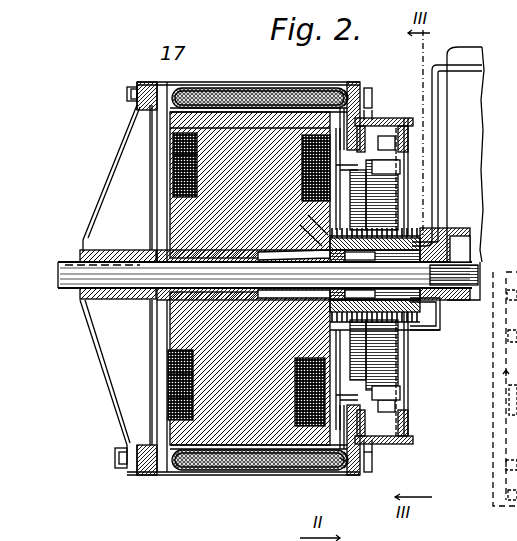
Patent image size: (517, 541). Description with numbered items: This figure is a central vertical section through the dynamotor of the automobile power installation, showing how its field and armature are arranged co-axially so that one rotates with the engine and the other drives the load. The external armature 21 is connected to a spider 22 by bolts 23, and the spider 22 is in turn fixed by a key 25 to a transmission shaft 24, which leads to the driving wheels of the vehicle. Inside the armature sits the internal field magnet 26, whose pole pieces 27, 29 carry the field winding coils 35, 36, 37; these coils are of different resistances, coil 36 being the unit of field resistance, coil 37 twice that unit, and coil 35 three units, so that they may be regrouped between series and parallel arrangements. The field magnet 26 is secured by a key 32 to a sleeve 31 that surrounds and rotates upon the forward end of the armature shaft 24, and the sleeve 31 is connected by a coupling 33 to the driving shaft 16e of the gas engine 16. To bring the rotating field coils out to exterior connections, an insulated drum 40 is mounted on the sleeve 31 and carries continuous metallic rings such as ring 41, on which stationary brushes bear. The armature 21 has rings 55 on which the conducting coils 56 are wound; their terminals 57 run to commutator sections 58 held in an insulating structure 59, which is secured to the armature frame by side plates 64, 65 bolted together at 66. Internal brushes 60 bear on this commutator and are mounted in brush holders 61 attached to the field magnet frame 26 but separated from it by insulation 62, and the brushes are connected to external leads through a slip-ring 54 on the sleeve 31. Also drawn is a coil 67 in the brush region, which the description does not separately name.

The gas engine 16 is at (465, 173).
The driving shaft 16e is at (470, 260).
The external armature 21 is at (265, 90).
The spider 22 is at (110, 184).
The bolts 23 is at (127, 94).
The transmission shaft 24 is at (78, 290).
The key 25 is at (80, 257).
The internal field magnet 26 is at (250, 278).
The pole piece 27 is at (250, 127).
The pole piece 29 is at (258, 449).
The sleeve 31 is at (251, 268).
The key 32 is at (283, 258).
The coupling 33 is at (438, 330).
The field coil 35 is at (198, 144).
The field coil 36 is at (198, 163).
The field coil 37 is at (198, 183).
The insulated drum 40 is at (445, 240).
The metallic ring 41 is at (438, 192).
The slip-ring 54 is at (310, 228).
The armature ring 55 is at (310, 92).
The conducting coils 56 is at (341, 92).
The terminals 57 is at (369, 90).
The commutator sections 58 is at (385, 128).
The insulating structure 59 is at (408, 130).
The internal brush 60 is at (397, 182).
The brush holder 61 is at (386, 168).
The insulation 62 is at (362, 480).
The side plate 64 is at (375, 118).
The side plate 65 is at (400, 140).
The bolt 66 is at (412, 470).
The coil 67 is at (360, 384).